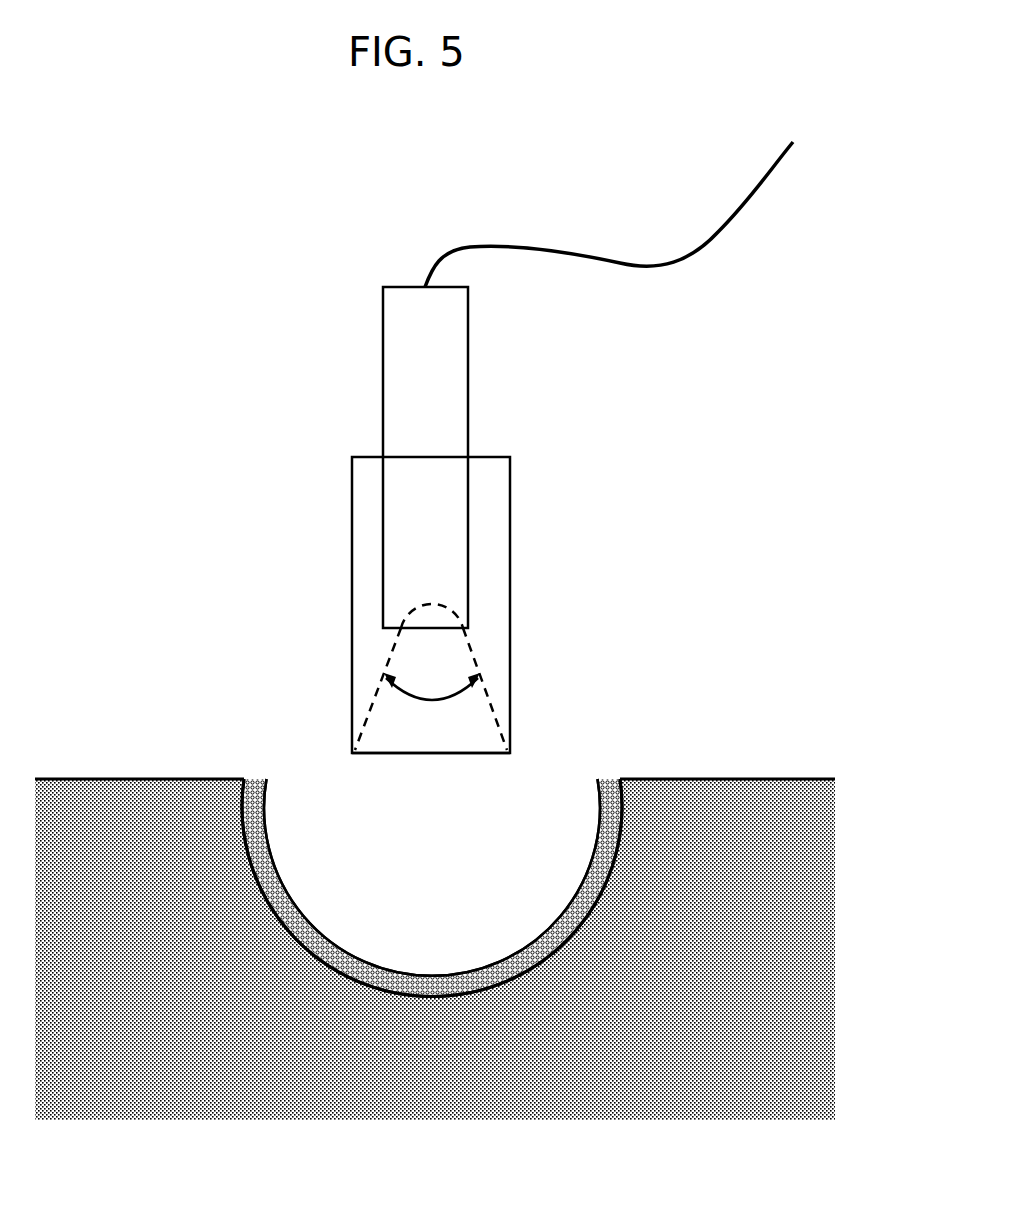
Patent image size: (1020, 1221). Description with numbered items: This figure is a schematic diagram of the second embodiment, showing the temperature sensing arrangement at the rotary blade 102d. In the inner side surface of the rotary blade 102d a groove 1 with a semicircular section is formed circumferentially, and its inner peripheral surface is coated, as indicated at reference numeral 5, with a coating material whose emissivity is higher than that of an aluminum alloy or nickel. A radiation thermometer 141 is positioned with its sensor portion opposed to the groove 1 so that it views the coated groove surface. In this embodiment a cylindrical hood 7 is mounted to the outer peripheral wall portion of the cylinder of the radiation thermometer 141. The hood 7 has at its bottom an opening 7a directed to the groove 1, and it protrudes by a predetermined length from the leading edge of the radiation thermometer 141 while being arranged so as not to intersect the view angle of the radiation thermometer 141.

The rotary blade 102d is at (715, 786).
The coating material 5 is at (268, 802).
The groove 1 is at (616, 800).
The cylindrical hood 7 is at (510, 605).
The opening 7a is at (430, 754).
The radiation thermometer 141 is at (468, 374).